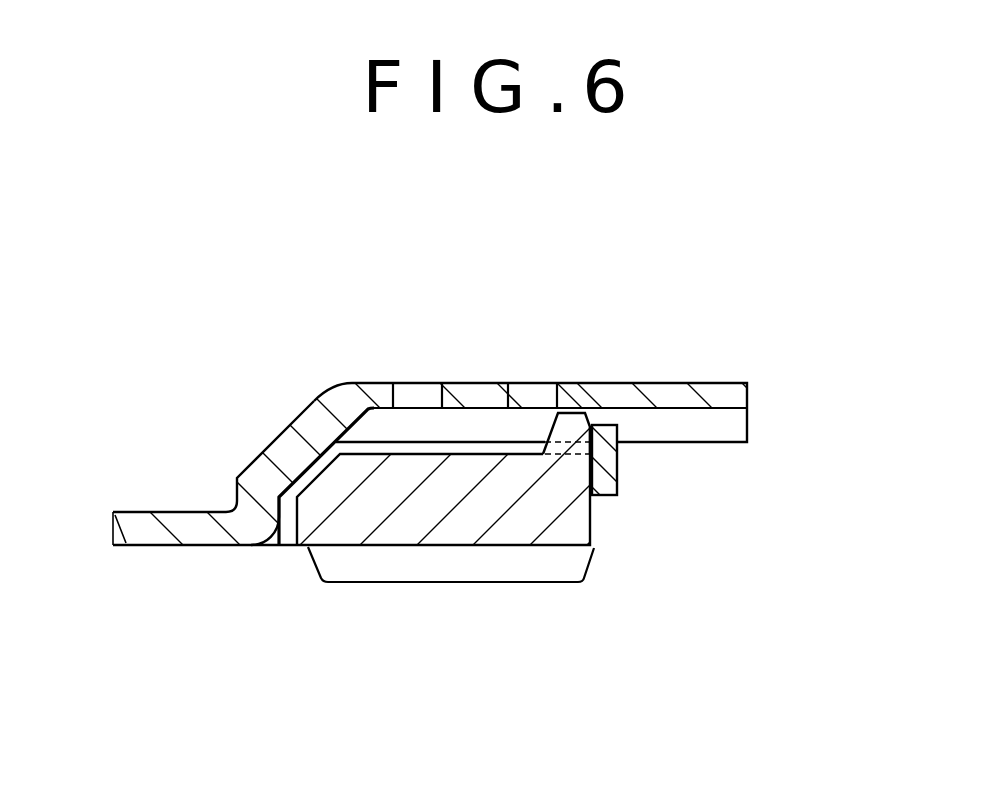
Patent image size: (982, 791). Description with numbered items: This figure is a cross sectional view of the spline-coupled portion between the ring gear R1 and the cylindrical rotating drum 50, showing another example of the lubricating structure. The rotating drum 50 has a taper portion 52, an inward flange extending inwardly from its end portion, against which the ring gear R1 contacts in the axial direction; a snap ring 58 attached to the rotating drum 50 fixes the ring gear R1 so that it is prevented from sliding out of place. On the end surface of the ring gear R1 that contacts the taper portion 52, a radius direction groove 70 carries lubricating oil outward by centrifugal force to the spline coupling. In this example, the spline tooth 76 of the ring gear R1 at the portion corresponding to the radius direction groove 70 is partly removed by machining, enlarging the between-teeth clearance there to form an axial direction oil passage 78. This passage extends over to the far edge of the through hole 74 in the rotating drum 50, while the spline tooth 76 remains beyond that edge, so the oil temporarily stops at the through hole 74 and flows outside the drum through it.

The rotating drum 50 is at (713, 392).
The taper portion 52 is at (313, 432).
The snap ring 58 is at (610, 459).
The radius direction groove 70 is at (263, 449).
The through hole 74 is at (434, 388).
The spline tooth 76 is at (572, 423).
The axial direction oil passage 78 is at (385, 425).
The ring gear R1 is at (465, 523).